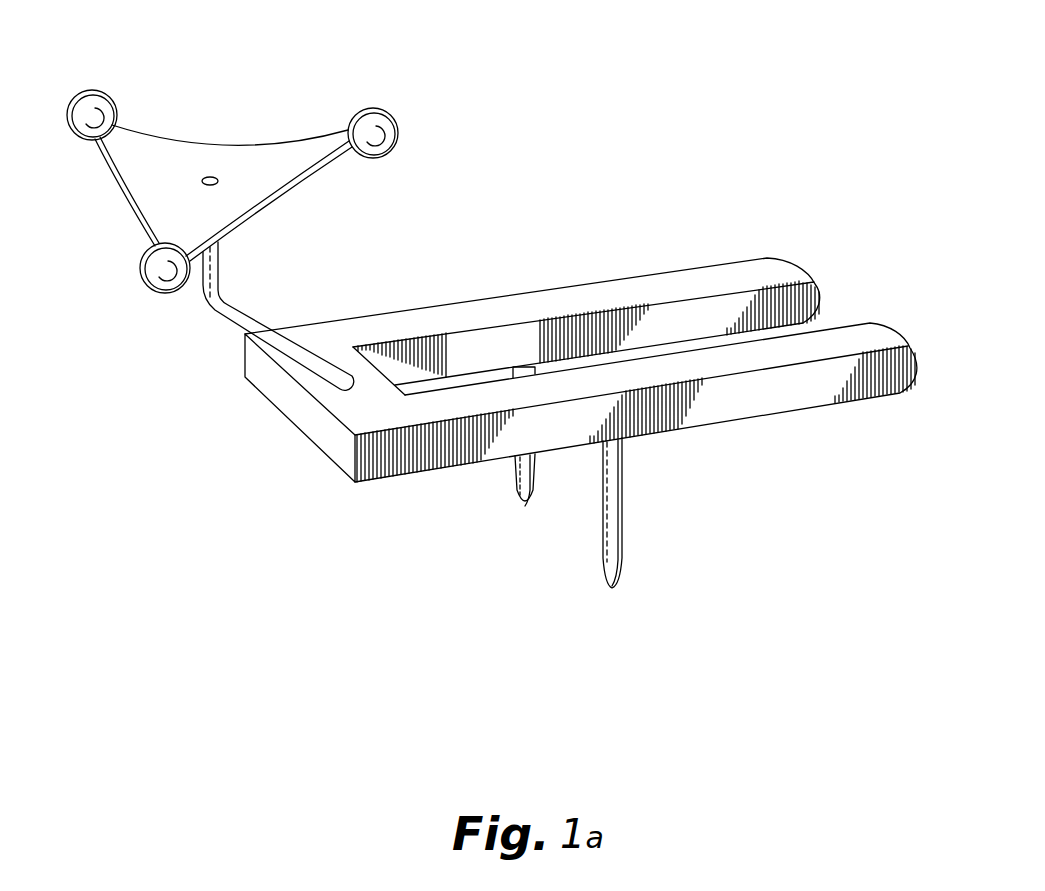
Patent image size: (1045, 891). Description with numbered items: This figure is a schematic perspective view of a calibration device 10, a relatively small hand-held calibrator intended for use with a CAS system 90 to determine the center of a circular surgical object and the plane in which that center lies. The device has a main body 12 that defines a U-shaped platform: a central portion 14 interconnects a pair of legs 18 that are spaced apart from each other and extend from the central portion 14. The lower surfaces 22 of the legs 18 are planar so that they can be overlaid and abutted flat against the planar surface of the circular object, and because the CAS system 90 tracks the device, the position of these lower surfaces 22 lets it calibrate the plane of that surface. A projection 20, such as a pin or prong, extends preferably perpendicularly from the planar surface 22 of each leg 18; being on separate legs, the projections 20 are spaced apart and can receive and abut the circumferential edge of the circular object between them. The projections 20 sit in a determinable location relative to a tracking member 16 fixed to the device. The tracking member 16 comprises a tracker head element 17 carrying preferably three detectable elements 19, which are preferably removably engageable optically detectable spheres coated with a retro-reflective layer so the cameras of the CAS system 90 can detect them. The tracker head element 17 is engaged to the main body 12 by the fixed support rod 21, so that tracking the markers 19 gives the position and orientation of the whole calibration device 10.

The calibration device 10 is at (505, 238).
The main body 12 is at (290, 420).
The central portion 14 is at (360, 411).
The tracking member 16 is at (202, 142).
The tracker head element 17 is at (262, 165).
The legs 18 is at (660, 283).
The detectable elements 19 is at (377, 140).
The projections 20 is at (520, 492).
The fixed support rod 21 is at (220, 318).
The lower surfaces 22 is at (747, 342).
The CAS system 90 is at (727, 685).